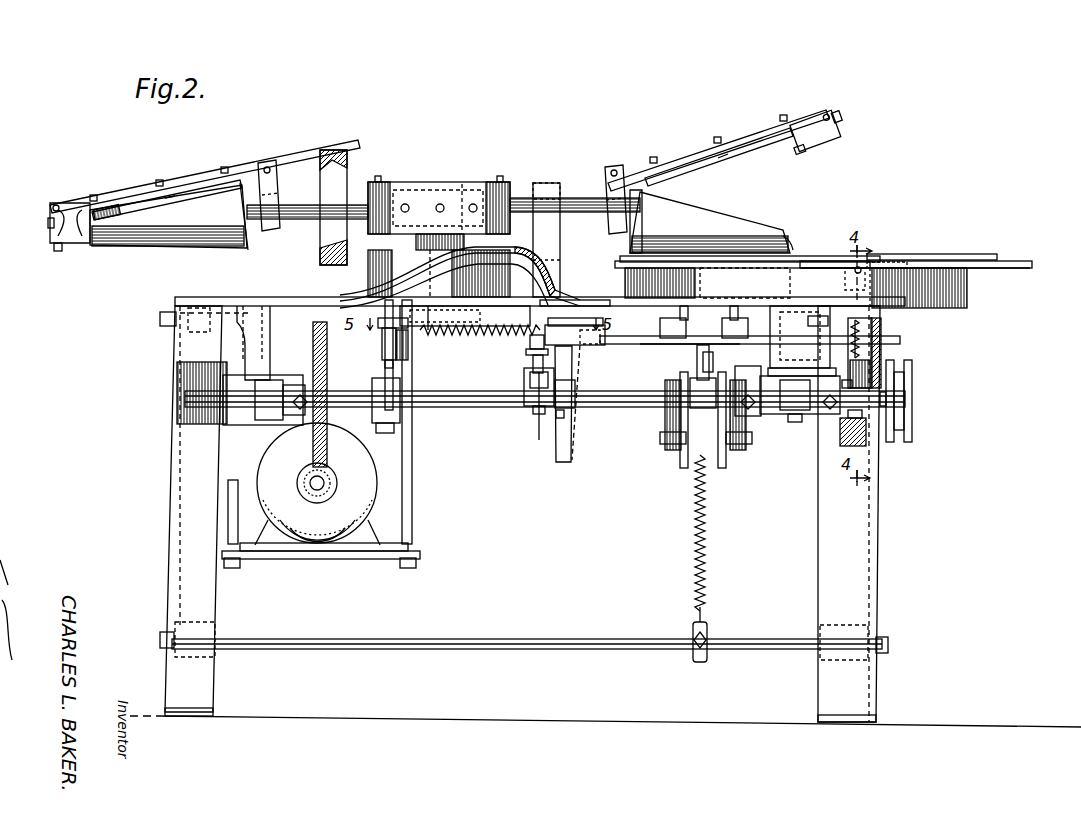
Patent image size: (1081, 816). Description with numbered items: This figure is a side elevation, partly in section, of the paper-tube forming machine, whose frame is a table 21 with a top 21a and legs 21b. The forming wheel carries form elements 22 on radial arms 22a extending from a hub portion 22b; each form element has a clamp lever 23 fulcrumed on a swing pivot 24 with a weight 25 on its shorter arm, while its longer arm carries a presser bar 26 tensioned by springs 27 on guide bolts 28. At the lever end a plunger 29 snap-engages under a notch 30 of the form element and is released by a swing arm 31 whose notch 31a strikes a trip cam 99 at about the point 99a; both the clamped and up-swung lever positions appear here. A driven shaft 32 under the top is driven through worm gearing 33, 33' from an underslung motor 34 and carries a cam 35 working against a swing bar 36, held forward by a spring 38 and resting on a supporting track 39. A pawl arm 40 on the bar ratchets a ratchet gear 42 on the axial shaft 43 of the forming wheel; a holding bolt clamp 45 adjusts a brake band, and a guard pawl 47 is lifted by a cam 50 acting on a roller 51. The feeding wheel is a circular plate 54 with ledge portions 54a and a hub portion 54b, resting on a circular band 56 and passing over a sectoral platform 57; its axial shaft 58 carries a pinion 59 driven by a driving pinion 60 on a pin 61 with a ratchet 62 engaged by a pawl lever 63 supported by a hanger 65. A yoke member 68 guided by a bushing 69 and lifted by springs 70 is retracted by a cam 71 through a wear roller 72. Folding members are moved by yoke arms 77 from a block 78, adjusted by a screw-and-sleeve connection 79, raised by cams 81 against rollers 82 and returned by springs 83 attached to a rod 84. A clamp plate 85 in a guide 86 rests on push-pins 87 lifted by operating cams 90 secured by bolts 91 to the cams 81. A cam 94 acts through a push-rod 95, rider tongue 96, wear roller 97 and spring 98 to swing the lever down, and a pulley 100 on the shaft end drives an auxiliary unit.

The table 21 is at (176, 302).
The top 21a is at (197, 300).
The legs 21b is at (182, 500).
The form element 22 is at (192, 236).
The radial arms 22a is at (308, 220).
The hub portion 22b is at (416, 182).
The lever 23 is at (290, 163).
The swing pivot 24 is at (266, 170).
The weight 25 is at (322, 258).
The presser bar 26 is at (135, 208).
The springs 27 is at (172, 194).
The guide bolts 28 is at (224, 168).
The plunger 29 is at (800, 154).
The notch 30 is at (790, 242).
The swing arm 31 is at (52, 214).
The notch 31a is at (58, 252).
The driven shaft 32 is at (470, 402).
The worm gearing 33 is at (252, 394).
The worm gearing 33' is at (301, 483).
The motor 34 is at (278, 466).
The cam 35 is at (580, 350).
The swing bar 36 is at (598, 340).
The spring 38 is at (476, 336).
The supporting track 39 is at (572, 346).
The pawl arm 40 is at (470, 318).
The ratchet gear 42 is at (428, 306).
The axial shaft 43 is at (463, 186).
The holding bolt clamp 45 is at (420, 326).
The guard pawl 47 is at (380, 326).
The cam 50 is at (388, 420).
The roller 51 is at (384, 340).
The circular plate 54 is at (836, 255).
The ledge portions 54a is at (990, 256).
The hub portion 54b is at (896, 262).
The circular band 56 is at (960, 296).
The sectoral platform 57 is at (985, 268).
The axial shaft 58 is at (842, 268).
The pinion 59 is at (804, 341).
The driving pinion 60 is at (710, 376).
The pin 61 is at (806, 362).
The ratchet 62 is at (750, 385).
The pawl lever 63 is at (596, 344).
The hanger 65 is at (877, 256).
The yoke member 68 is at (880, 356).
The bushing 69 is at (868, 290).
The springs 70 is at (862, 338).
The cam 71 is at (904, 384).
The wear roller 72 is at (842, 432).
The yoke arms 77 is at (708, 365).
The block 78 is at (698, 378).
The screw-and-sleeve connection 79 is at (652, 337).
The cams 81 is at (684, 468).
The rollers 82 is at (690, 388).
The springs 83 is at (703, 552).
The rod 84 is at (576, 644).
The clamp plate 85 is at (622, 265).
The guide 86 is at (628, 288).
The push-pins 87 is at (668, 322).
The operating cams 90 is at (666, 452).
The bolts 91 is at (660, 438).
The cam 94 is at (540, 410).
The push-rod 95 is at (535, 302).
The rider tongue 96 is at (540, 384).
The wear roller 97 is at (532, 368).
The spring 98 is at (532, 346).
The trip cam 99 is at (500, 250).
The point 99a is at (470, 266).
The pulley 100 is at (906, 432).